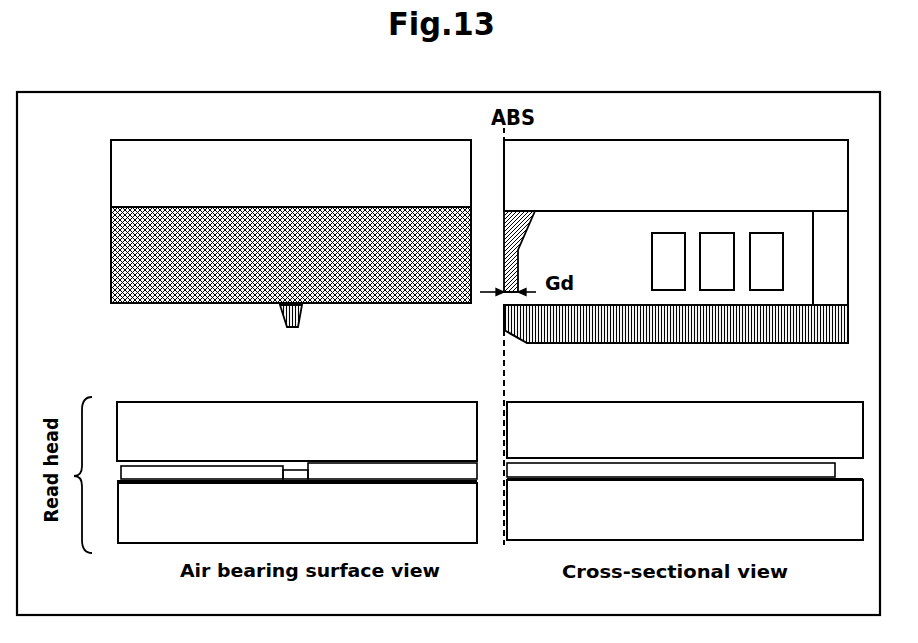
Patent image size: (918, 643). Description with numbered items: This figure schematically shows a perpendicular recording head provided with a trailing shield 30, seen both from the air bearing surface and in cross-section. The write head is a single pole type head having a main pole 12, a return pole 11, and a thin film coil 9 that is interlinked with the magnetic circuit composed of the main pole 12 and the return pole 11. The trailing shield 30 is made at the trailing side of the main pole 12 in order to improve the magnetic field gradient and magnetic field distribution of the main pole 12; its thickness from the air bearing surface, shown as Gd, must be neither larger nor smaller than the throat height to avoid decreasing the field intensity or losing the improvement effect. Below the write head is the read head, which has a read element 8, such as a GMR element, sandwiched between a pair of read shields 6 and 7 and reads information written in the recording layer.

The read shield 6 is at (170, 525).
The read shield 7 is at (246, 412).
The read element 8 is at (295, 465).
The thin film coil 9 is at (661, 260).
The return pole 11 is at (142, 189).
The main pole 12 is at (282, 318).
The trailing shield 30 is at (132, 260).